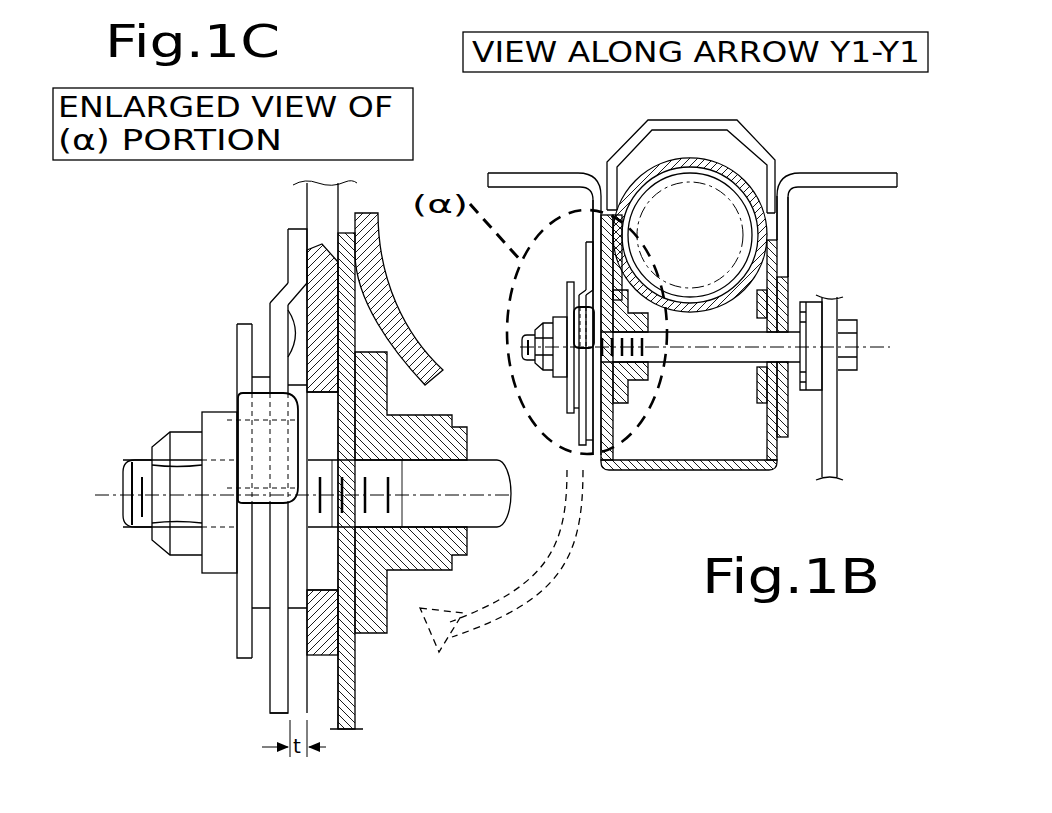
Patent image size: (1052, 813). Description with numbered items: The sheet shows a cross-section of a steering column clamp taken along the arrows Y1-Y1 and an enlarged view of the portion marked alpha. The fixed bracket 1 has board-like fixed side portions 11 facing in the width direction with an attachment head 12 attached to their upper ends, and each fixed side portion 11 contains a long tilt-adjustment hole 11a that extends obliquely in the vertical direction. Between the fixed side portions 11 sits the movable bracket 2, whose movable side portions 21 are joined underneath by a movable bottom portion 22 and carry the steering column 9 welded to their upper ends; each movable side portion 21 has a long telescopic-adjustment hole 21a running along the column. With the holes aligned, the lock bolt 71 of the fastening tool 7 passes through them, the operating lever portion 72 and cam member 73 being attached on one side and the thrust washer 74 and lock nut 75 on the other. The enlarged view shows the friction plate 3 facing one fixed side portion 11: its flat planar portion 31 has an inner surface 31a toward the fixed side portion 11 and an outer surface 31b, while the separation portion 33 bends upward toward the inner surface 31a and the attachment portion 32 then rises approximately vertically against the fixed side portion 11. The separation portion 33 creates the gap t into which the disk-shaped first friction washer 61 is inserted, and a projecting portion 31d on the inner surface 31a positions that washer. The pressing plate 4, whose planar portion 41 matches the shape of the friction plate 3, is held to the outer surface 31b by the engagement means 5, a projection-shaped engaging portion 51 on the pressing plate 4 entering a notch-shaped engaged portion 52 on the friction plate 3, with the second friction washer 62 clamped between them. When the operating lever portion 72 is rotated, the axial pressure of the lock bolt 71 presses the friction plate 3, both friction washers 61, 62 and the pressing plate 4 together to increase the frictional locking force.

In FIG. 1C, the fixed bracket 1 is at (343, 449).
In FIG. 1B, the fixed bracket 1 is at (692, 277).
In FIG. 1C, the fixed side portion 11 is at (365, 416).
In FIG. 1B, the fixed side portion 11 is at (783, 265).
In FIG. 1C, the long tilt-adjustment hole 11a is at (326, 411).
In FIG. 1B, the attachment head 12 is at (747, 128).
In FIG. 1C, the movable bracket 2 is at (378, 490).
In FIG. 1B, the movable bracket 2 is at (694, 378).
In FIG. 1C, the movable side portion 21 is at (355, 695).
In FIG. 1B, the movable side portion 21 is at (768, 444).
In FIG. 1C, the long telescopic-adjustment hole 21a is at (347, 457).
In FIG. 1B, the long telescopic-adjustment hole 21a is at (630, 346).
In FIG. 1B, the movable bottom portion 22 is at (672, 472).
In FIG. 1C, the friction plate 3 is at (234, 457).
In FIG. 1B, the friction plate 3 is at (541, 362).
In FIG. 1C, the planar portion 31 is at (278, 348).
In FIG. 1B, the planar portion 31 is at (580, 283).
In FIG. 1C, the inner surface 31a is at (290, 688).
In FIG. 1C, the outer surface 31b is at (272, 665).
In FIG. 1C, the projecting portion 31d is at (286, 302).
In FIG. 1C, the attachment portion 32 is at (288, 240).
In FIG. 1C, the separation portion 33 is at (288, 282).
In FIG. 1B, the separation portion 33 is at (587, 272).
In FIG. 1C, the pressing plate 4 is at (210, 495).
In FIG. 1B, the pressing plate 4 is at (565, 403).
In FIG. 1C, the planar portion 41 is at (237, 620).
In FIG. 1C, the engagement means 5 is at (197, 418).
In FIG. 1B, the engagement means 5 is at (532, 309).
In FIG. 1C, the engaging portion 51 is at (258, 440).
In FIG. 1B, the engaging portion 51 is at (573, 318).
In FIG. 1C, the engaged portion 52 is at (282, 366).
In FIG. 1C, the first friction washer 61 is at (290, 612).
In FIG. 1B, the first friction washer 61 is at (588, 442).
In FIG. 1C, the second friction washer 62 is at (263, 612).
In FIG. 1B, the second friction washer 62 is at (578, 409).
In FIG. 1C, the fastening tool 7 is at (301, 502).
In FIG. 1B, the fastening tool 7 is at (661, 387).
In FIG. 1C, the lock bolt 71 is at (125, 525).
In FIG. 1B, the lock bolt 71 is at (688, 353).
In FIG. 1B, the operating lever portion 72 is at (838, 422).
In FIG. 1B, the cam member 73 is at (813, 300).
In FIG. 1C, the thrust washer 74 is at (212, 575).
In FIG. 1B, the thrust washer 74 is at (560, 377).
In FIG. 1C, the lock nut 75 is at (168, 552).
In FIG. 1B, the lock nut 75 is at (545, 325).
In FIG. 1C, the steering column 9 is at (398, 310).
In FIG. 1B, the steering column 9 is at (728, 180).